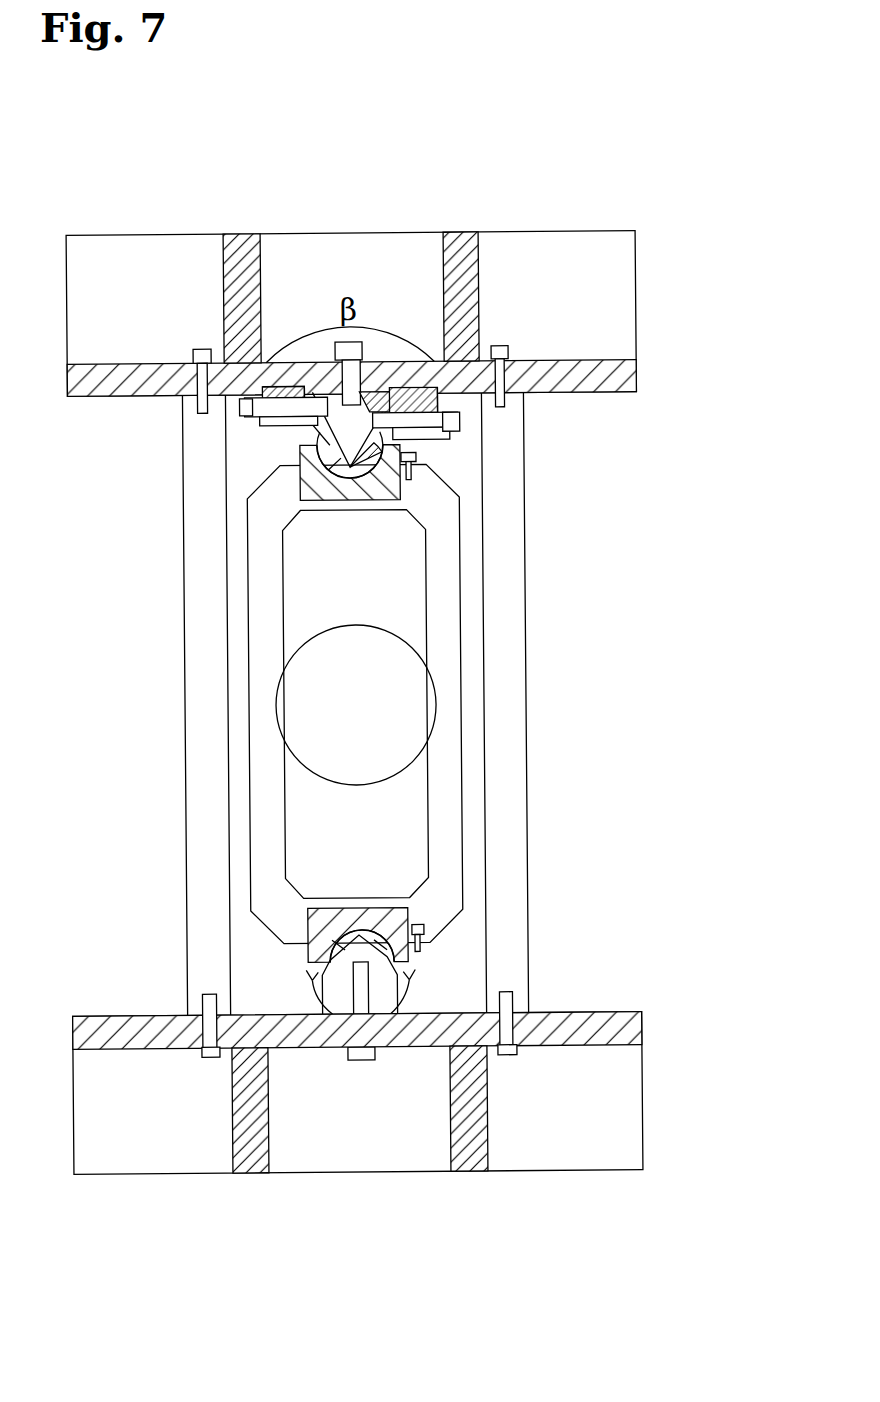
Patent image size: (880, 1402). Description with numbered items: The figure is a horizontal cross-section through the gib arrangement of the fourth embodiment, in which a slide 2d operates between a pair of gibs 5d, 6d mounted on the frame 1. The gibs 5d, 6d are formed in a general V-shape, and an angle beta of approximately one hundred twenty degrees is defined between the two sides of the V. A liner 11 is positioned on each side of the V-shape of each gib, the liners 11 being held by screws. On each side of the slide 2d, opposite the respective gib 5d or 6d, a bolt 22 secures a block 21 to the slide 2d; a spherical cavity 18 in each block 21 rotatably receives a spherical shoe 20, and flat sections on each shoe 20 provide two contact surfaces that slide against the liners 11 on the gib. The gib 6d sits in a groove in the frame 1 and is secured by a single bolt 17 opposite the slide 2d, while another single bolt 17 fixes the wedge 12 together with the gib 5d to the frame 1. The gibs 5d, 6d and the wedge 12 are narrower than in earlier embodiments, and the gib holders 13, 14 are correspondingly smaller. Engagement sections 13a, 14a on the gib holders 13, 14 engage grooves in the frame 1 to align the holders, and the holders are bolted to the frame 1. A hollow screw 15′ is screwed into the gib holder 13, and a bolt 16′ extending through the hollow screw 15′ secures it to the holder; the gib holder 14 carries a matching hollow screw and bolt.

The frame 1 is at (607, 1033).
The slide 2d is at (445, 578).
The gib 5d is at (363, 362).
The gib 6d is at (385, 1000).
The liner 11 is at (288, 392).
The wedge 12 is at (375, 400).
The gib holder 13 is at (272, 388).
The engagement section 13a is at (258, 398).
The gib holder 14 is at (432, 387).
The engagement section 14a is at (460, 387).
The hollow screw 15′ is at (245, 383).
The bolt 16′ is at (240, 398).
The bolt 17 is at (349, 352).
The spherical cavity 18 is at (333, 466).
The spherical shoe 20 is at (417, 462).
The block 21 is at (383, 483).
The bolt 22 is at (417, 458).